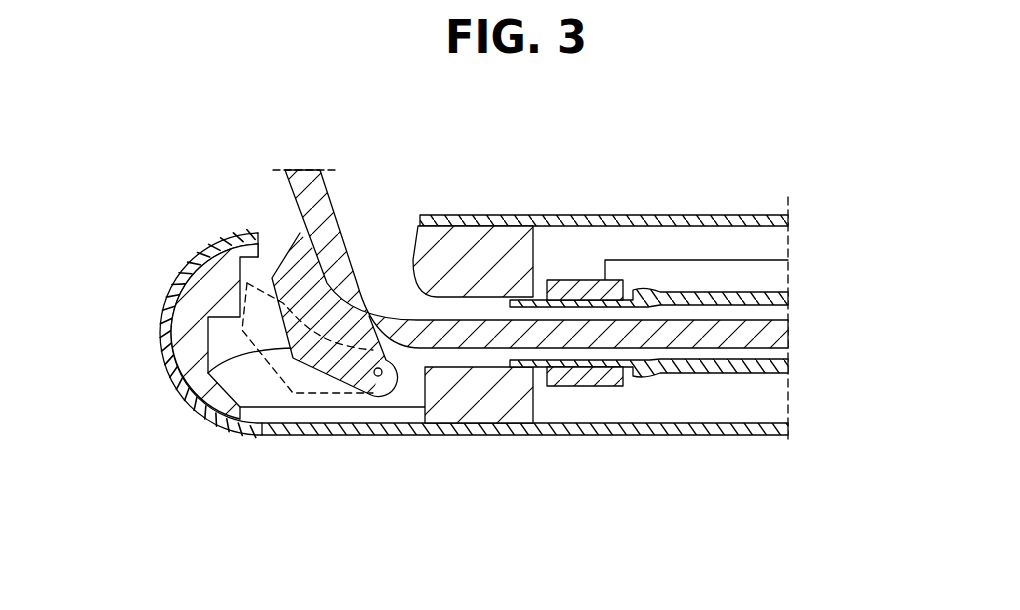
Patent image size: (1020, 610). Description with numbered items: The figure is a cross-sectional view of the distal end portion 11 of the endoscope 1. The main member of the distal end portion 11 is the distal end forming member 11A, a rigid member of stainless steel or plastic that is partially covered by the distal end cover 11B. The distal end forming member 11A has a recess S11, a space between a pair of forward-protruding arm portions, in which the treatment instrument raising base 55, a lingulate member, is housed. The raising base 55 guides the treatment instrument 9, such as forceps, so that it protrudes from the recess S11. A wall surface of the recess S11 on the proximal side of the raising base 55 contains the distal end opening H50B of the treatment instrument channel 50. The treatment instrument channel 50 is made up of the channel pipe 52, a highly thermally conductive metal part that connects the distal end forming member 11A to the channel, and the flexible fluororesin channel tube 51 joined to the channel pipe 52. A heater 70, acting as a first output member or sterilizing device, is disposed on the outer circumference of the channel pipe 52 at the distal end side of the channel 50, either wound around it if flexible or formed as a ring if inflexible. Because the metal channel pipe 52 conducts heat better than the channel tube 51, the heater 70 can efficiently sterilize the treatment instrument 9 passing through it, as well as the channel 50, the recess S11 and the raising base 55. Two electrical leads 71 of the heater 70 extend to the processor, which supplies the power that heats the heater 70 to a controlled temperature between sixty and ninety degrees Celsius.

The endoscope 1 is at (130, 178).
The treatment instrument 9 is at (330, 196).
The recess S11 is at (378, 196).
The distal end opening H50B is at (452, 310).
The distal end portion 11 is at (474, 385).
The distal end forming member 11A is at (283, 433).
The distal end cover 11B is at (343, 433).
The treatment instrument channel 50 is at (649, 425).
The channel tube 51 is at (698, 372).
The channel pipe 52 is at (593, 367).
The treatment instrument raising base 55 is at (270, 363).
The heater 70 is at (598, 287).
The electrical leads 71 is at (690, 260).